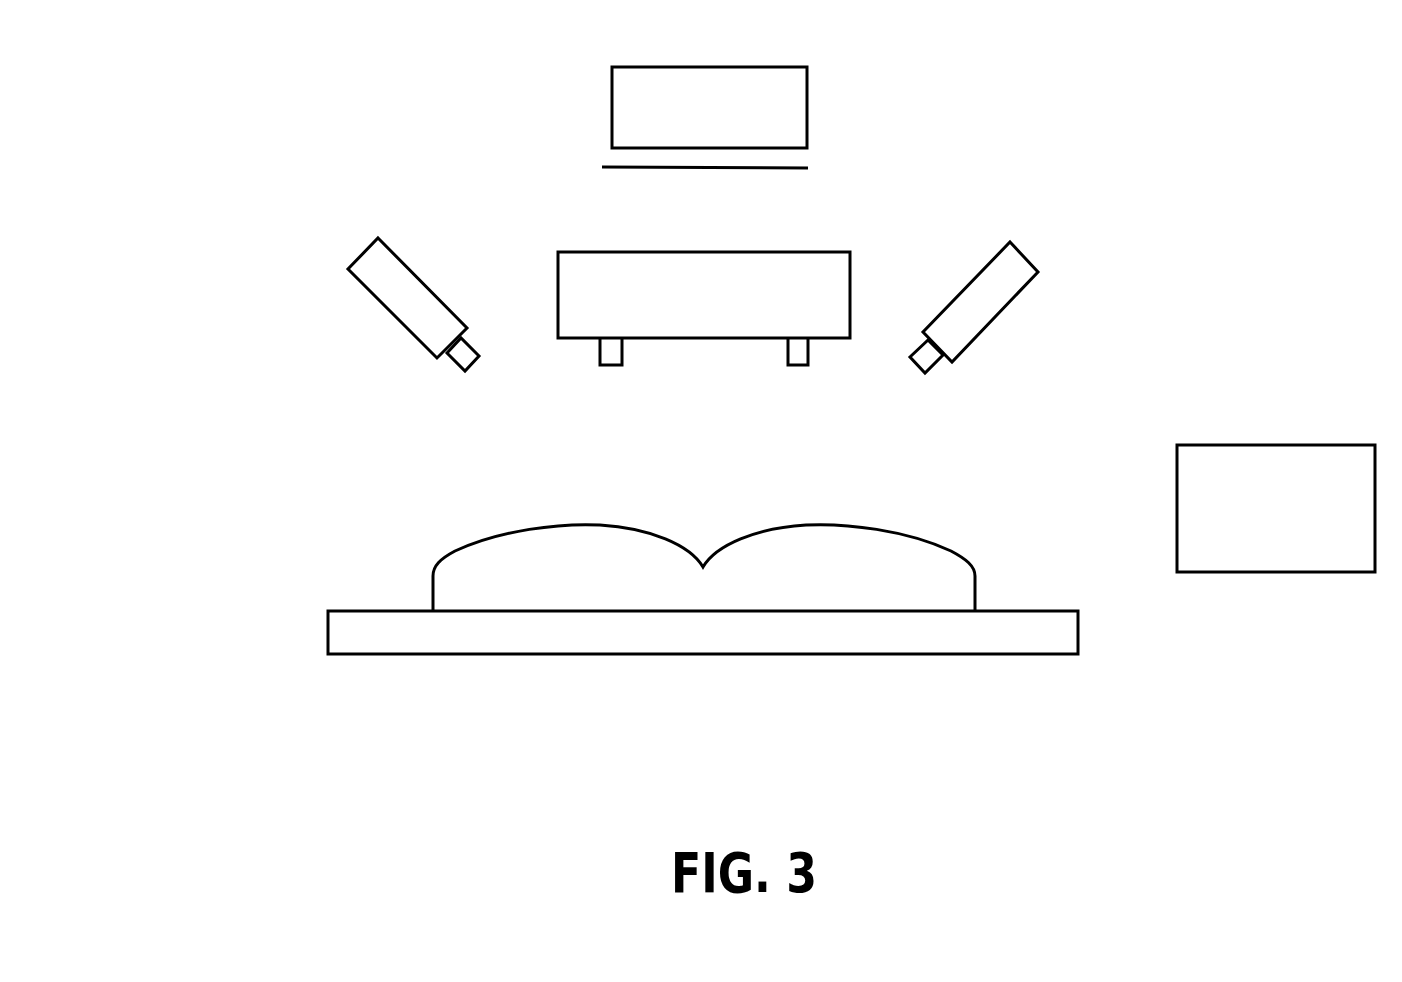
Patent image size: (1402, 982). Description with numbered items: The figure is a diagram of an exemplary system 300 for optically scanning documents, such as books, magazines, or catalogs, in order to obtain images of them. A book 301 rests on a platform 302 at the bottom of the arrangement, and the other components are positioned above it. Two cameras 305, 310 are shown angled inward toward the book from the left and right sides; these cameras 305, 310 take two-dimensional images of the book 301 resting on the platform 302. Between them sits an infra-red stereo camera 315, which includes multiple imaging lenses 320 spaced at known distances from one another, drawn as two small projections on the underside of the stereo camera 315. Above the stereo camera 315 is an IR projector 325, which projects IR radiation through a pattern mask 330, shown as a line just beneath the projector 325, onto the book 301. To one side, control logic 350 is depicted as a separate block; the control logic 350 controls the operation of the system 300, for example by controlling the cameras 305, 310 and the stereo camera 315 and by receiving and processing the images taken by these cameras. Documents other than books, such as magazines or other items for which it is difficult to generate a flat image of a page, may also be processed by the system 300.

The system 300 is at (130, 146).
The IR projector 325 is at (612, 68).
The pattern mask 330 is at (602, 167).
The IR stereo camera 315 is at (558, 252).
The imaging lenses 320 is at (600, 365).
The camera 305 is at (352, 266).
The camera 310 is at (1005, 246).
The control logic 350 is at (1177, 445).
The book 301 is at (476, 538).
The platform 302 is at (1071, 611).